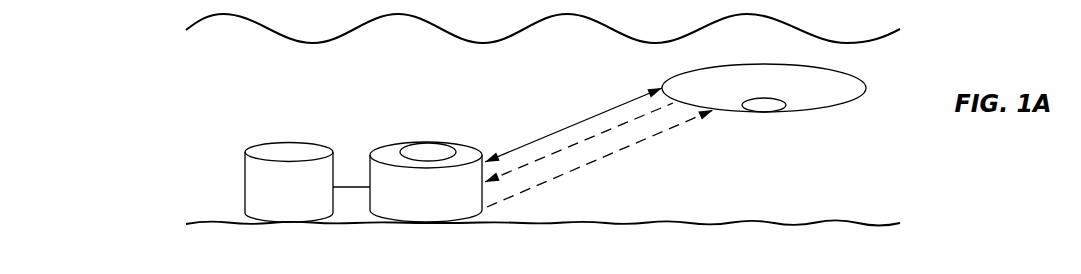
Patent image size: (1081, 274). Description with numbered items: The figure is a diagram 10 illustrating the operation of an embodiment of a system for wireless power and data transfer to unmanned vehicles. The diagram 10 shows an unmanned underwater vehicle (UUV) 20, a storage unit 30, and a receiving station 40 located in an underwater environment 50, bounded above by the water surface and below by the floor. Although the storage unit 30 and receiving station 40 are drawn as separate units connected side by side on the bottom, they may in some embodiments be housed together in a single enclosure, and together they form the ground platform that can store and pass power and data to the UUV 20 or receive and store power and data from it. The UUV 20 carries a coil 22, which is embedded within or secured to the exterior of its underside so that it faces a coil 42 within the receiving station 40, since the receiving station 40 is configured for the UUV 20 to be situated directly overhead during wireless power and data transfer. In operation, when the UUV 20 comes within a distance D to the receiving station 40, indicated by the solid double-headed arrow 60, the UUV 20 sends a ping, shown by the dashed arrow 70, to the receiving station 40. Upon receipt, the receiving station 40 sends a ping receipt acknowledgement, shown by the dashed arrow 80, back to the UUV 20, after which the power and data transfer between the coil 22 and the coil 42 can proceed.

The diagram 10 is at (113, 57).
The unmanned underwater vehicle (UUV) 20 is at (868, 85).
The coil 22 is at (768, 107).
The storage unit 30 is at (291, 146).
The receiving station 40 is at (379, 143).
The coil 42 is at (428, 152).
The underwater environment 50 is at (828, 184).
The arrow 60 is at (533, 140).
The arrow 70 is at (630, 120).
The arrow 80 is at (657, 136).